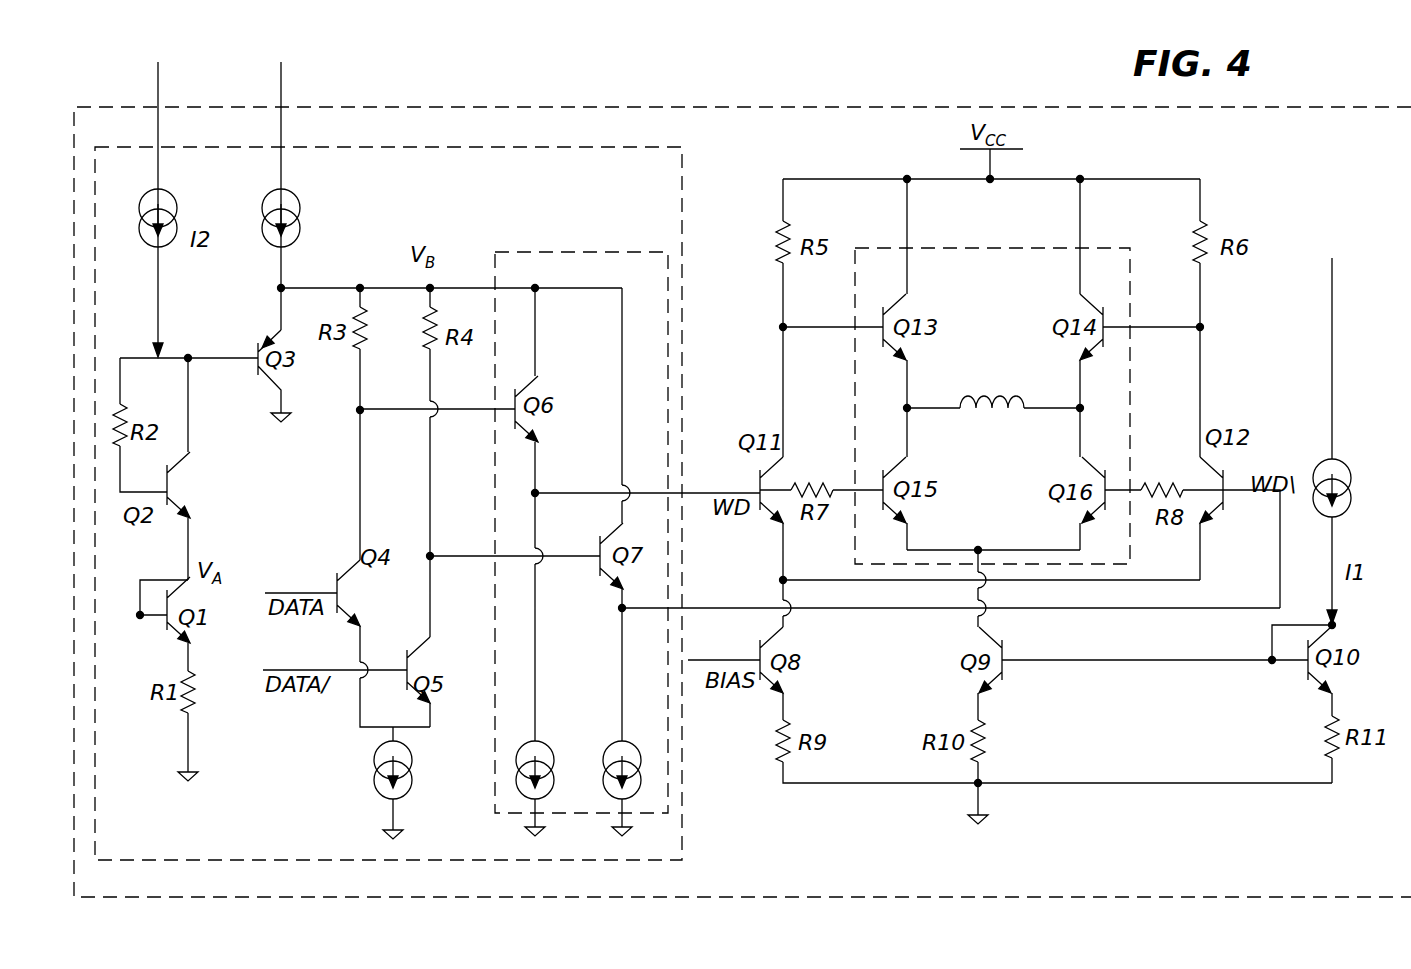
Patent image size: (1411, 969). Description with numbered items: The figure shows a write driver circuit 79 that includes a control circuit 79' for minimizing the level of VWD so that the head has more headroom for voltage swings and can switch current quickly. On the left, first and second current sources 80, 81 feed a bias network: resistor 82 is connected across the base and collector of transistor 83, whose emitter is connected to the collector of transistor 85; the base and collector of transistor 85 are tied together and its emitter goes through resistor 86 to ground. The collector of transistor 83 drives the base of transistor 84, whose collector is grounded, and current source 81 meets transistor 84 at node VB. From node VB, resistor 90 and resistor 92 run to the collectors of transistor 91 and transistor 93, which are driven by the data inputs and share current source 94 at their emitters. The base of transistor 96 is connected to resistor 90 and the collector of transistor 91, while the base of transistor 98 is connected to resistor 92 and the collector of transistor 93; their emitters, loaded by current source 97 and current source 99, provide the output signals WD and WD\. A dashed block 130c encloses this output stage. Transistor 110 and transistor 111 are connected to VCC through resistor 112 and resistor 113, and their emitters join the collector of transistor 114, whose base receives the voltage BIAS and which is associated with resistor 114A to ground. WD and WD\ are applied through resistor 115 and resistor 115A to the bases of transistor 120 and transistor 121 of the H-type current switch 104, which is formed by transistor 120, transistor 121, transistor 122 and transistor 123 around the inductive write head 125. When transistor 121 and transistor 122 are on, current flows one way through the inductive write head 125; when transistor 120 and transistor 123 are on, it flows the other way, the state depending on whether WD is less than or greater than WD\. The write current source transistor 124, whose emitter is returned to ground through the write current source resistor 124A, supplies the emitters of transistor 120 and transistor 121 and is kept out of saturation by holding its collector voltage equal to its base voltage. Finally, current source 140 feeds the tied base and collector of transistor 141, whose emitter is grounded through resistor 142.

The write driver circuit 79 is at (742, 474).
The control circuit 79' is at (388, 462).
The first current source 80 is at (152, 203).
The second current source 81 is at (270, 203).
The resistor 82 is at (122, 410).
The transistor 83 is at (172, 490).
The transistor 84 is at (255, 350).
The transistor 85 is at (165, 622).
The resistor 86 is at (190, 716).
The resistor 90 is at (363, 330).
The transistor 91 is at (337, 583).
The resistor 92 is at (433, 325).
The transistor 93 is at (408, 655).
The current source 94 is at (412, 760).
The transistor 96 is at (512, 402).
The current source 97 is at (550, 752).
The transistor 98 is at (598, 548).
The current source 99 is at (625, 745).
The H-type current switch 104 is at (968, 248).
The transistor 110 is at (757, 487).
The transistor 111 is at (1228, 483).
The resistor 112 is at (782, 235).
The resistor 113 is at (1203, 228).
The transistor 114 is at (757, 655).
The resistor 114A is at (785, 762).
The resistor 115 is at (806, 487).
The resistor 115A is at (1160, 487).
The transistor 120 is at (883, 483).
The transistor 121 is at (1108, 482).
The transistor 122 is at (880, 322).
The transistor 123 is at (1108, 320).
The write current source transistor 124 is at (1007, 652).
The write current source resistor 124A is at (983, 755).
The inductive write head 125 is at (985, 400).
The level shifting circuit 130c is at (525, 252).
The current source 140 is at (1348, 475).
The transistor 141 is at (1305, 672).
The resistor 142 is at (1328, 752).